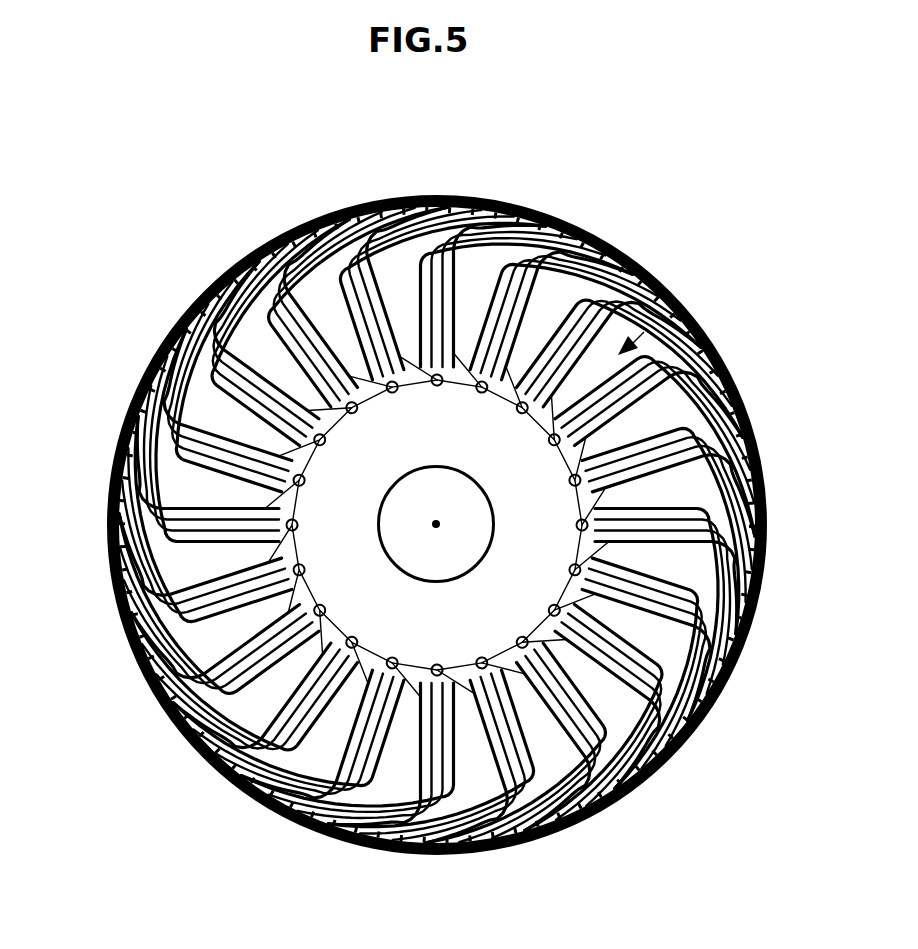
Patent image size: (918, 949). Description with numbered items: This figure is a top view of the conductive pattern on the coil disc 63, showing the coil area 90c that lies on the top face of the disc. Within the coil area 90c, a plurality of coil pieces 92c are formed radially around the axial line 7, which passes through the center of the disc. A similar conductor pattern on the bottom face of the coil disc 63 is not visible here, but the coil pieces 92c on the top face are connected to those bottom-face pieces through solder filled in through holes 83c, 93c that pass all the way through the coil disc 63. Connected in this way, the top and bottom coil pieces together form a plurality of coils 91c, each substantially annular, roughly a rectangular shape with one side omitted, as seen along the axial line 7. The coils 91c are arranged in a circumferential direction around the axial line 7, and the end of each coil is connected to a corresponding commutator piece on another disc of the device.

The coil disc 63 is at (98, 168).
The axial line 7 is at (440, 521).
The through hole 83c is at (203, 567).
The coil area 90c is at (672, 296).
The coil 91c is at (653, 440).
The coil piece 92c is at (637, 450).
The through hole 93c is at (763, 527).